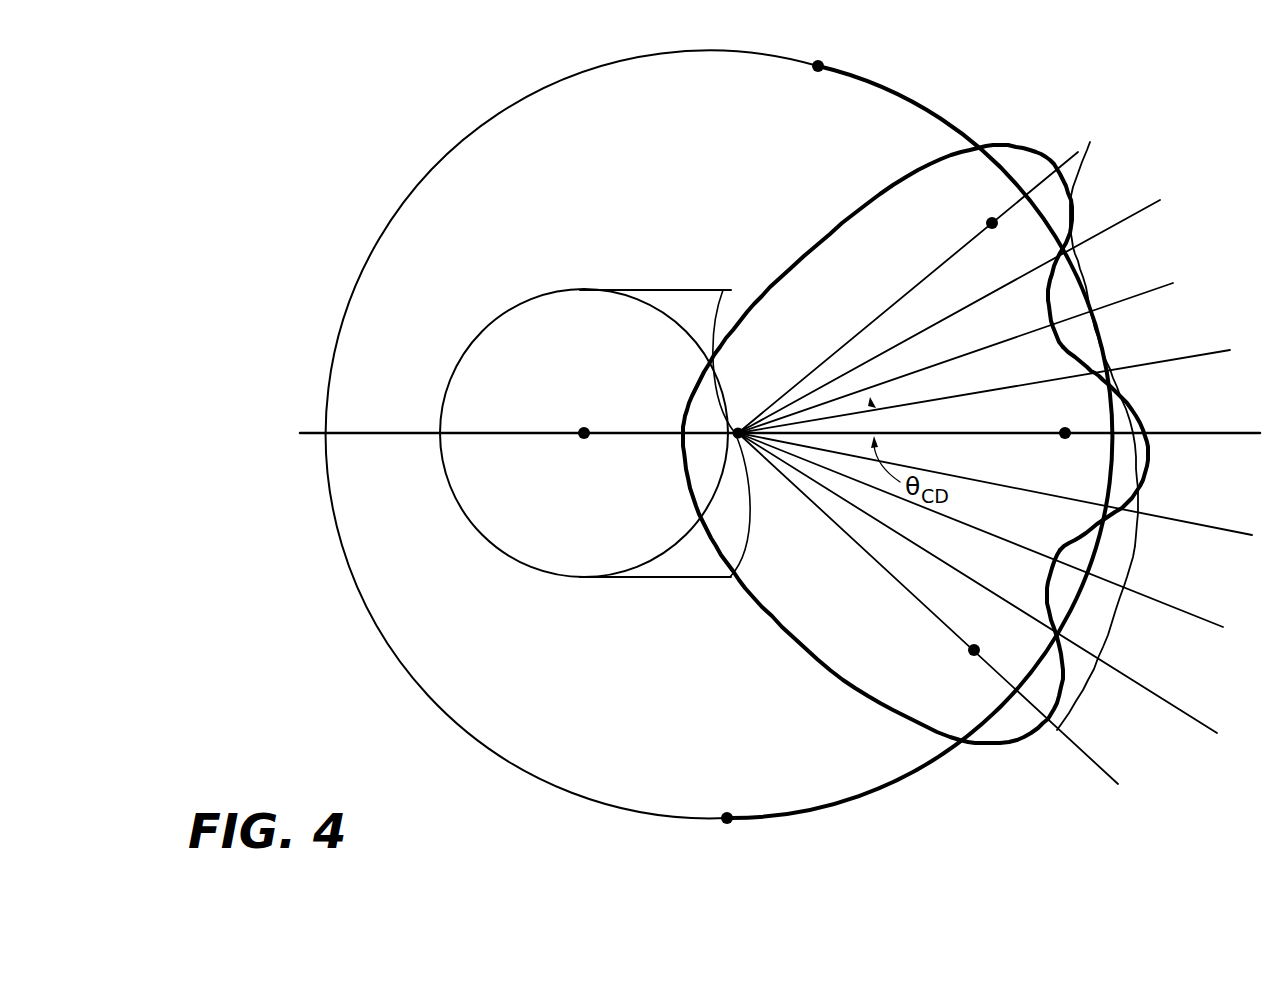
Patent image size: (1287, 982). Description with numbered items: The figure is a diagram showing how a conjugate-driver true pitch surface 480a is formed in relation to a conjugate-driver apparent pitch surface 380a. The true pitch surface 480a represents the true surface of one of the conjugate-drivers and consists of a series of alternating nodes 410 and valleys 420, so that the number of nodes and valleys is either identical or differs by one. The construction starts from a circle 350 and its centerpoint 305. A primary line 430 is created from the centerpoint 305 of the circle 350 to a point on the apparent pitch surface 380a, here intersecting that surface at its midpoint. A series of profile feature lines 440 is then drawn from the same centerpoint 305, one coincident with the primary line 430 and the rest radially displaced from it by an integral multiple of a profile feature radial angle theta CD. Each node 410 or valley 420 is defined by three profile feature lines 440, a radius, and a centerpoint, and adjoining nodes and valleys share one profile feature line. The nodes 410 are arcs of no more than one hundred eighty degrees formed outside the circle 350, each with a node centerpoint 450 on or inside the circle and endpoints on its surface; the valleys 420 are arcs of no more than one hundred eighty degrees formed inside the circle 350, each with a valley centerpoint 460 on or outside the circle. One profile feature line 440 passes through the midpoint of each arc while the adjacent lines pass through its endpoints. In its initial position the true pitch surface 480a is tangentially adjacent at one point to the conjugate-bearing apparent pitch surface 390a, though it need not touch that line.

The centerpoint 305 is at (738, 428).
The circle 350 is at (630, 812).
The conjugate-driver apparent pitch surface 380a is at (870, 788).
The conjugate-bearing apparent pitch surface 390a is at (1140, 550).
The node 410 is at (1060, 177).
The valley 420 is at (1046, 590).
The primary line 430 is at (1190, 437).
The profile feature line 440 is at (907, 377).
The node centerpoint 450 is at (988, 220).
The valley centerpoint 460 is at (1152, 293).
The conjugate-driver true pitch surface 480a is at (998, 146).